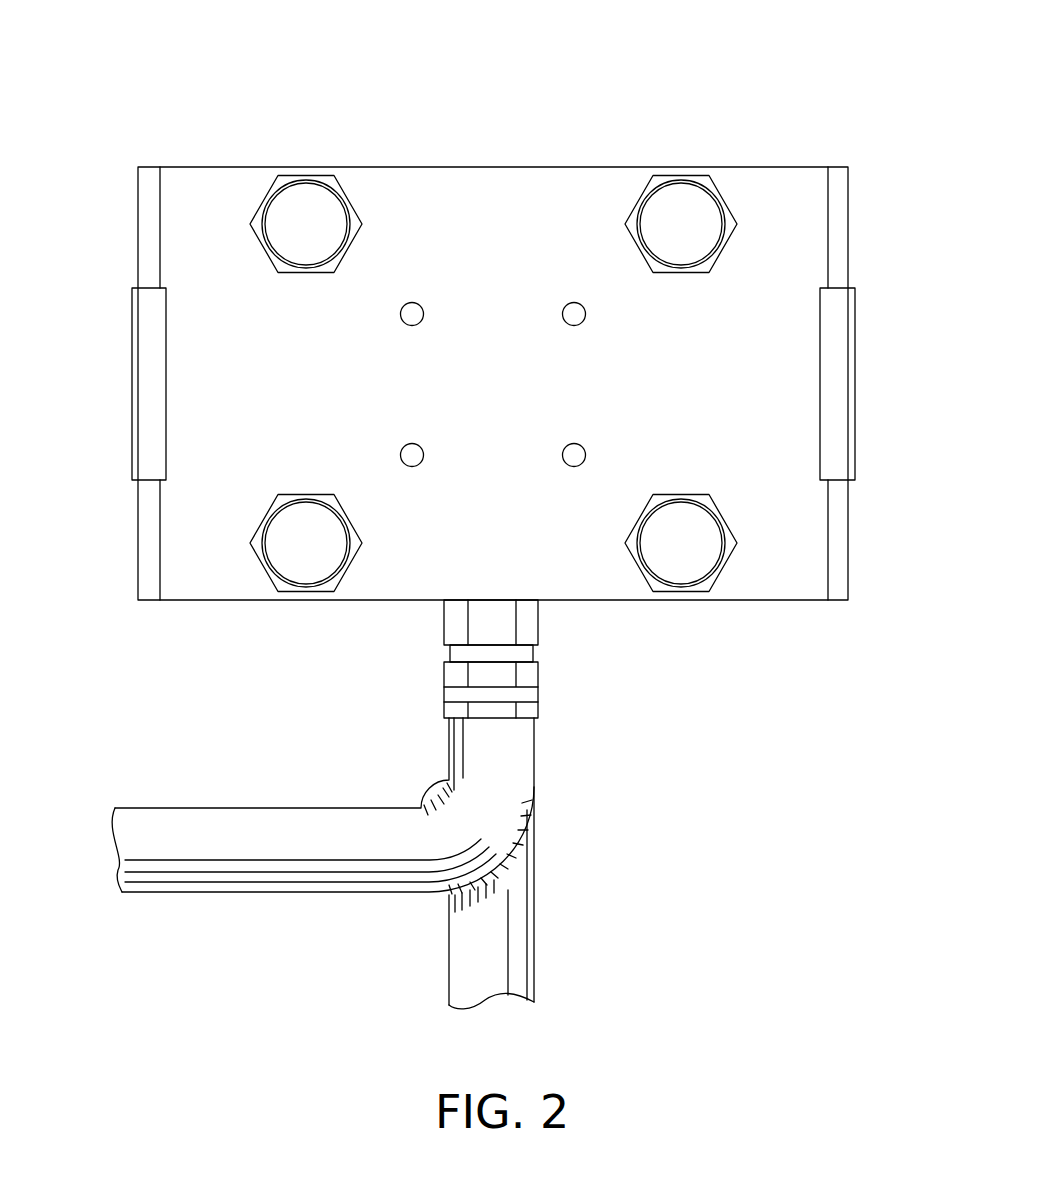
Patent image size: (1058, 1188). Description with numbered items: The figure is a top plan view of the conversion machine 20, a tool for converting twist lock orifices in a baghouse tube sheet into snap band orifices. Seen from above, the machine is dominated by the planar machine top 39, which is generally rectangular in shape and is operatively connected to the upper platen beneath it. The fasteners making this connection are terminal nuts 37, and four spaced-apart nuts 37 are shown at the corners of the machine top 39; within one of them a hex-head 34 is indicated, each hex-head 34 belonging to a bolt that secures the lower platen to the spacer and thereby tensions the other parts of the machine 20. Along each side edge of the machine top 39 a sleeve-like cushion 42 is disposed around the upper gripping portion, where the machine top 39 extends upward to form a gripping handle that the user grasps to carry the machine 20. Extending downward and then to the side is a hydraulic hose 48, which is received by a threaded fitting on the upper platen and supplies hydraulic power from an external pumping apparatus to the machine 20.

The conversion machine 20 is at (733, 35).
The hex-head 34 is at (322, 210).
The terminal nut 37 is at (334, 175).
The machine top 39 is at (560, 167).
The cushion 42 is at (147, 335).
The hydraulic hose 48 is at (515, 743).